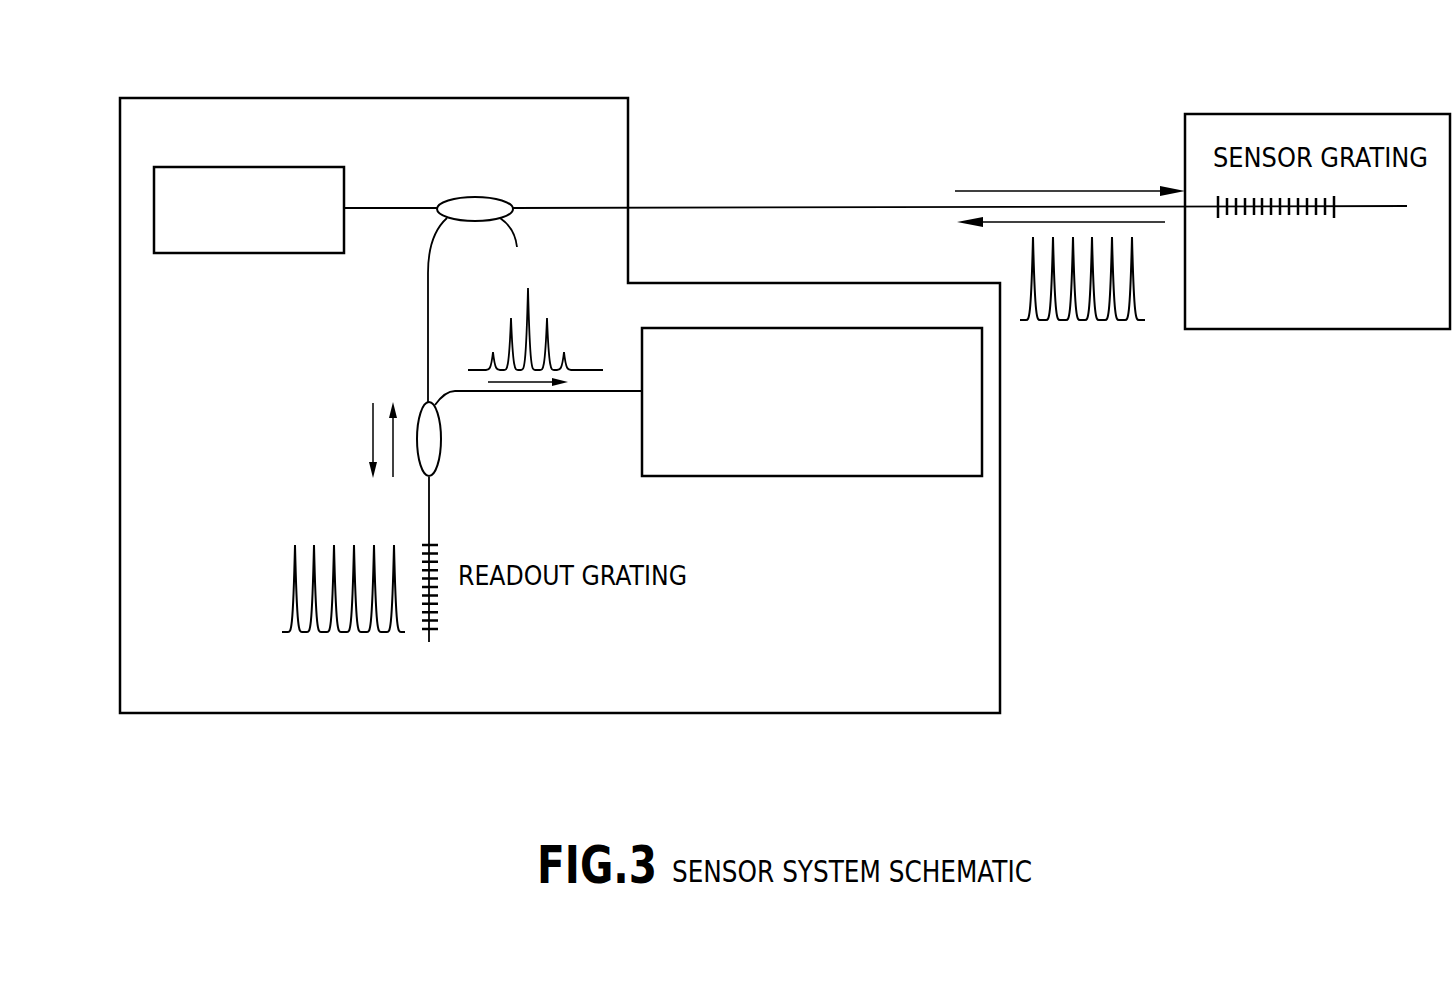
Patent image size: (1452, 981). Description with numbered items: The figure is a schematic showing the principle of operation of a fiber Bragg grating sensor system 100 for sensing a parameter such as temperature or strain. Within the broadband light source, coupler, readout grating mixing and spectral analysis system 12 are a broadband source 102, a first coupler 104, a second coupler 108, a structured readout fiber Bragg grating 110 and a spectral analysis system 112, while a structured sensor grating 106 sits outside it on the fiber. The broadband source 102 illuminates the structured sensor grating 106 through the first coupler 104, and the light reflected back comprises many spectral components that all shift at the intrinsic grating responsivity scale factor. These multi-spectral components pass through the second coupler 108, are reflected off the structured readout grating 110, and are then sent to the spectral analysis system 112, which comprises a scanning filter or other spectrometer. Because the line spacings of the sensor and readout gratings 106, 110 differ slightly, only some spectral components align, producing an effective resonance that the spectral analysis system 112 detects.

The sensor system 100 is at (360, 47).
The broadband light source, coupler, readout grating mixing and spectral analysis sy 12 is at (555, 97).
The broadband source 102 is at (215, 255).
The first coupler 104 is at (455, 195).
The structured sensor grating 106 is at (1282, 218).
The second coupler 108 is at (440, 455).
The structured readout fiber Bragg grating 110 is at (443, 623).
The spectral analysis system 112 is at (827, 477).